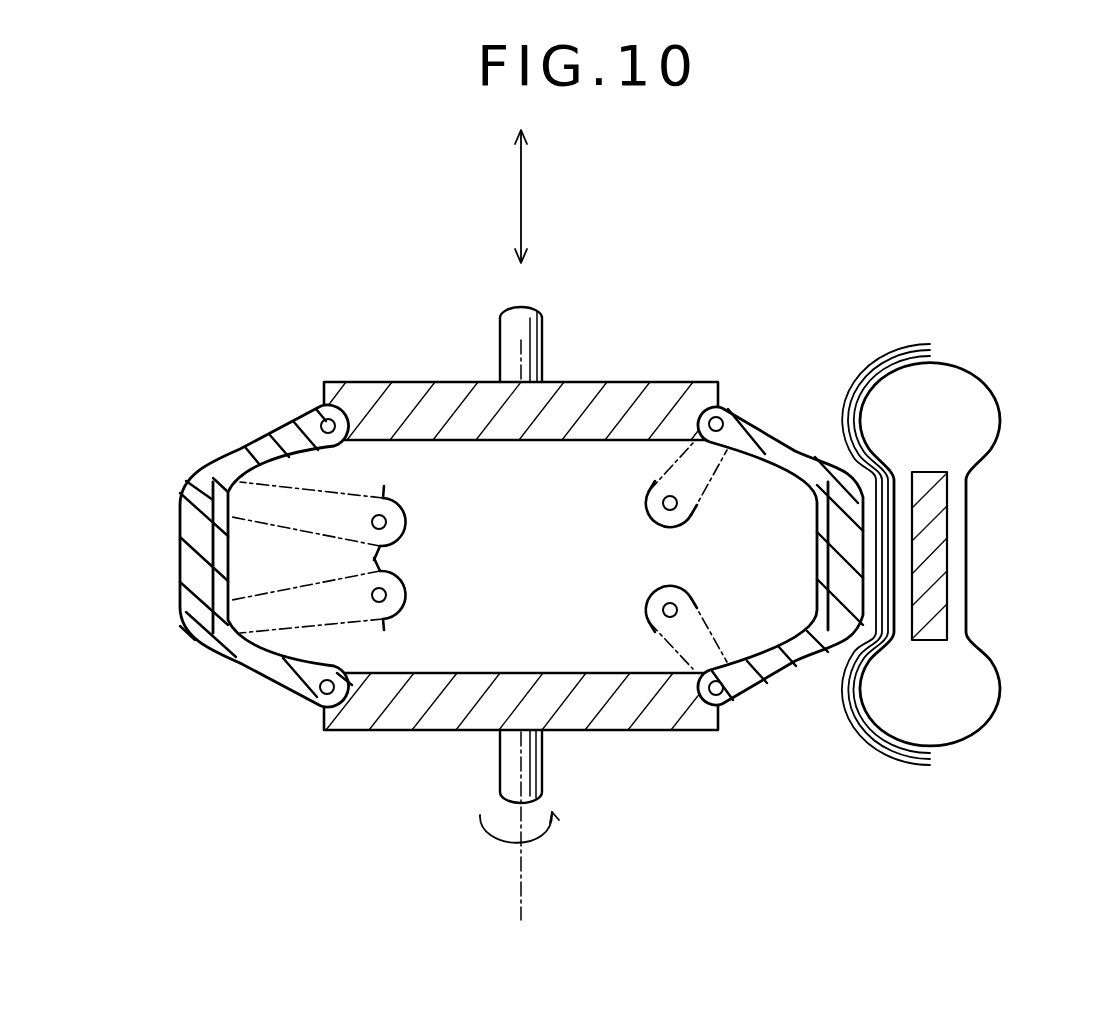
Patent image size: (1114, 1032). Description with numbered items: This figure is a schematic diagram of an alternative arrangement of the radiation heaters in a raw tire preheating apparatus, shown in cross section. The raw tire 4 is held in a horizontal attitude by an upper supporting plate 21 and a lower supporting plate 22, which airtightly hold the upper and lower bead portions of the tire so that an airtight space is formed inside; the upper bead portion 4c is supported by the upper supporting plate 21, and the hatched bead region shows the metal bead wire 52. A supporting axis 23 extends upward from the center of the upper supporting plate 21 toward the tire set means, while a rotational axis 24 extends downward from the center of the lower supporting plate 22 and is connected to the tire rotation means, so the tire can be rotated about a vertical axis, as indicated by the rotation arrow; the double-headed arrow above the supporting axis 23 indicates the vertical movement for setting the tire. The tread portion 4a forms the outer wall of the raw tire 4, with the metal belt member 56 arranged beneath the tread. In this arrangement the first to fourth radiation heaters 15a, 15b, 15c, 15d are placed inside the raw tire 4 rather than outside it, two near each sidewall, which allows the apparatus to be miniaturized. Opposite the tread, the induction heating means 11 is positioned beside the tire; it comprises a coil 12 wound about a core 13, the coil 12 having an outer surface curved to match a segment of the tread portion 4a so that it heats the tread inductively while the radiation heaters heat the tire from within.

The raw tire 4 is at (207, 519).
The tread portion 4a is at (177, 575).
The upper bead portion 4c is at (740, 403).
The induction heating means 11 is at (970, 519).
The coil 12 is at (943, 362).
The core 13 is at (925, 471).
The first radiation heater 15a is at (647, 513).
The second radiation heater 15b is at (405, 518).
The third radiation heater 15c is at (405, 595).
The fourth radiation heater 15d is at (647, 598).
The upper supporting plate 21 is at (636, 382).
The lower supporting plate 22 is at (680, 718).
The supporting axis 23 is at (500, 340).
The rotational axis 24 is at (500, 778).
The bead wire 52 is at (320, 420).
The belt member 56 is at (213, 527).